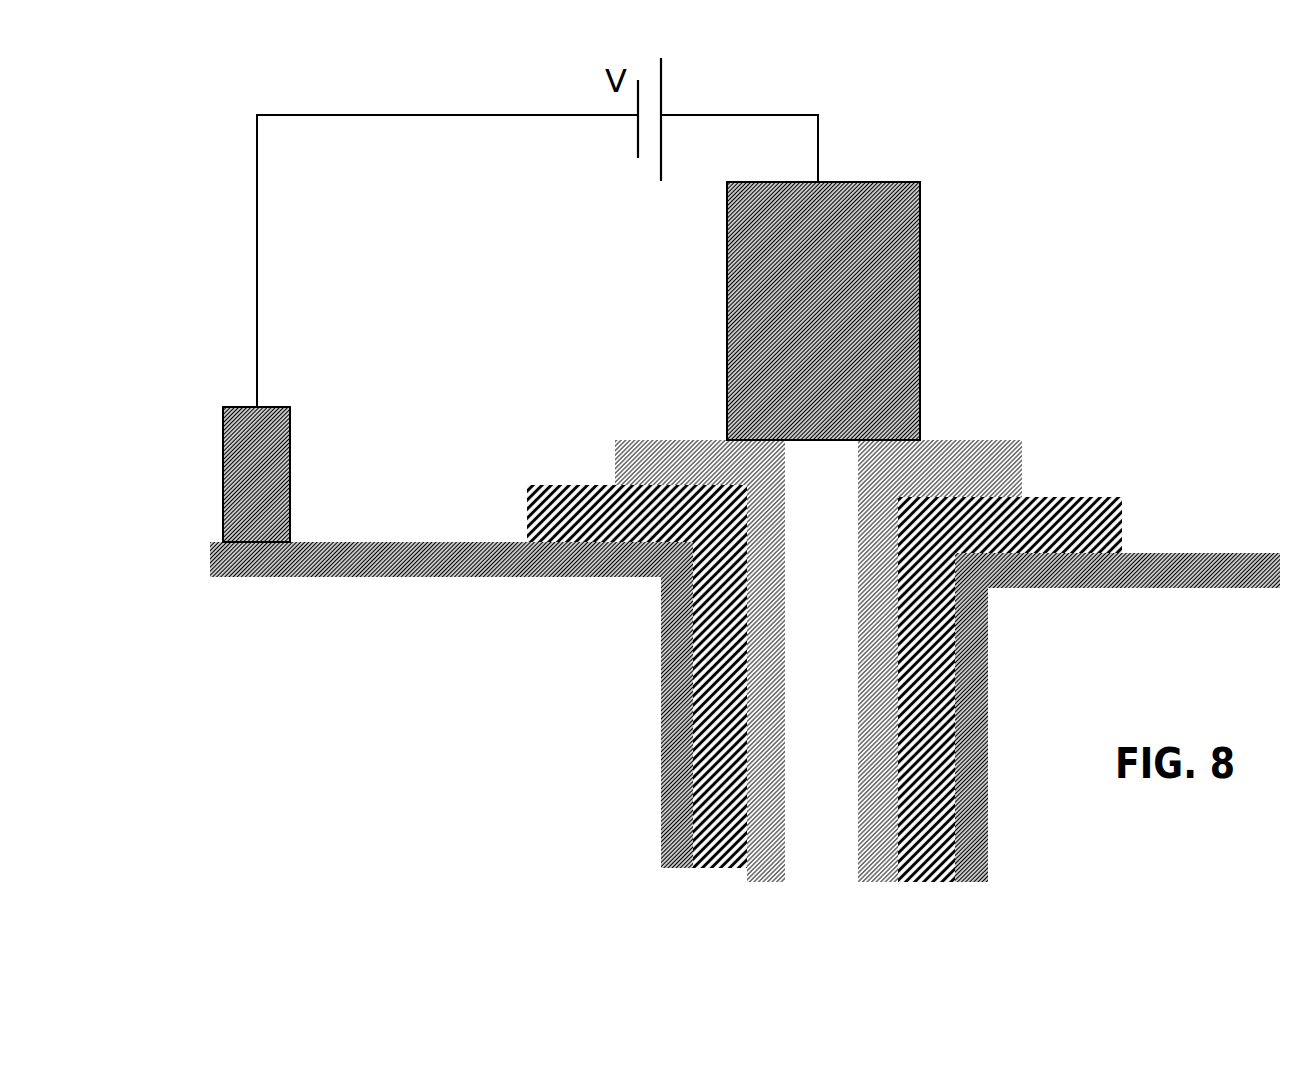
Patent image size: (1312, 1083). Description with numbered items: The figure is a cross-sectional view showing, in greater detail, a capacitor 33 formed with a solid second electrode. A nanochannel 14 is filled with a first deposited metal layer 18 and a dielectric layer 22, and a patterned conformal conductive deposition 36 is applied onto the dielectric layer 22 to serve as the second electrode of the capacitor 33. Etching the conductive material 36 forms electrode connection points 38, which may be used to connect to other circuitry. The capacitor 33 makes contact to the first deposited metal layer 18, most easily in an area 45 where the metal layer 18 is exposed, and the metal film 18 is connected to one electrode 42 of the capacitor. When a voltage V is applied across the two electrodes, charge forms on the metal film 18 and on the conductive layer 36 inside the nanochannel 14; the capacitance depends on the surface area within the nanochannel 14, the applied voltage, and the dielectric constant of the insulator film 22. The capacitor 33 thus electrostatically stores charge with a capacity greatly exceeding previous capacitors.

The nanochannel 14 is at (828, 699).
The deposited metal layer 18 is at (458, 542).
The dielectric layer 22 is at (582, 485).
The capacitor 33 is at (1015, 193).
The conformal conductive deposition 36 is at (975, 447).
The electrode connection points 38 is at (660, 441).
The electrode 42 is at (245, 406).
The area 45 is at (437, 452).